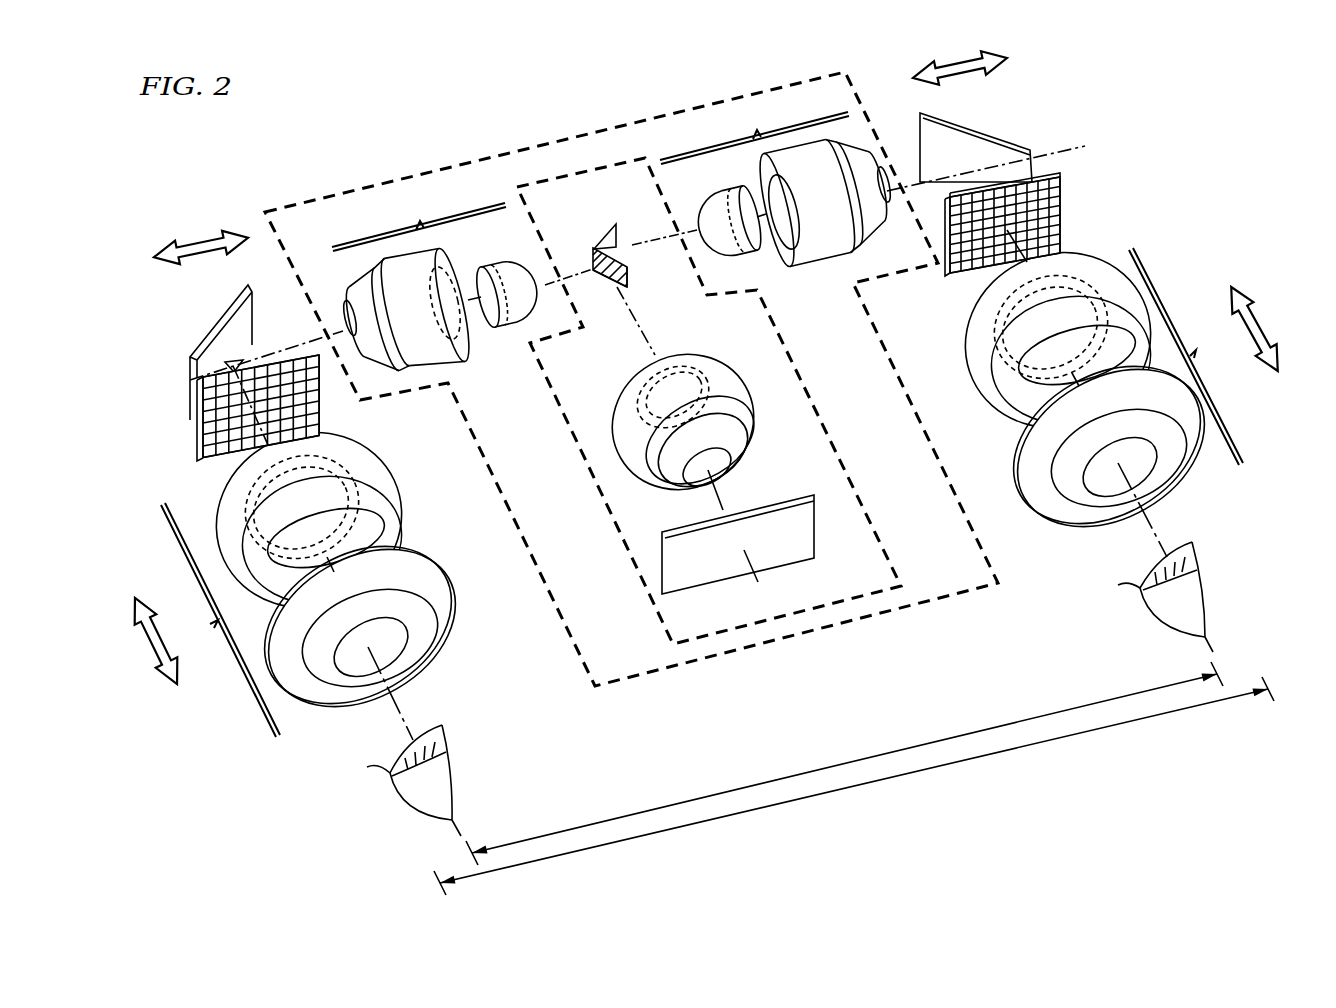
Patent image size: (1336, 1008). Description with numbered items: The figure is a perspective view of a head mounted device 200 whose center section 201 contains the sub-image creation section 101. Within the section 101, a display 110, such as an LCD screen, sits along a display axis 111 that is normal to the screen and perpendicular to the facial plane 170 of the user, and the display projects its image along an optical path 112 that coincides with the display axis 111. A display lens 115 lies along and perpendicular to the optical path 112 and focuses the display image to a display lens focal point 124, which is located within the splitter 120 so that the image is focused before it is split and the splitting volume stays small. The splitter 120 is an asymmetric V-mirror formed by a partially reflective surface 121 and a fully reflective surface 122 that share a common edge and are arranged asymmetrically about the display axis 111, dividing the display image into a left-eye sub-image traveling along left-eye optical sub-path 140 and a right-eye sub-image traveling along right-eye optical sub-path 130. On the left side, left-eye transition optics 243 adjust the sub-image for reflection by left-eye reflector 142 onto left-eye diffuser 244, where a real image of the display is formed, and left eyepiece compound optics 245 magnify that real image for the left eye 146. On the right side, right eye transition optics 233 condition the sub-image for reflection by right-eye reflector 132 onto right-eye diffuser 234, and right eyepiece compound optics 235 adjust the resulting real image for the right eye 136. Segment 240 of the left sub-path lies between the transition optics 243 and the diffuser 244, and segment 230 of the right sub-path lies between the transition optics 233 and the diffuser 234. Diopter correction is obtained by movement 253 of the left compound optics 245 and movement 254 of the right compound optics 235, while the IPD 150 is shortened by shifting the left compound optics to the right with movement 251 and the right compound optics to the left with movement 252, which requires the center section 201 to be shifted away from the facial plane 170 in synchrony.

The head mounted device 200 is at (232, 152).
The center section 201 is at (517, 525).
The sub-image creation section 101 is at (597, 483).
The display 110 is at (794, 555).
The display axis 111 is at (758, 582).
The optical path 112 is at (724, 501).
The display lens 115 is at (727, 386).
The splitter 120 is at (645, 287).
The partially reflective surface 121 is at (603, 284).
The fully reflective surface 122 is at (602, 237).
The display lens focal point 124 is at (629, 254).
The right-eye optical sub-path 130 is at (635, 238).
The right-eye reflector 132 is at (1017, 147).
The right eye 136 is at (1172, 625).
The left-eye optical sub-path 140 is at (580, 273).
The left-eye reflector 142 is at (202, 345).
The left eye 146 is at (418, 808).
The IPD 150 is at (827, 766).
The facial plane 170 is at (812, 798).
The segment of right-eye optical sub-path 230 is at (907, 187).
The right eye transition optics 233 is at (757, 130).
The right-eye diffuser 234 is at (1068, 196).
The right eyepiece compound optics 235 is at (1197, 351).
The segment of left-eye optical sub-path 240 is at (285, 339).
The left-eye transition optics 243 is at (420, 222).
The left-eye diffuser 244 is at (198, 440).
The left eyepiece compound optics 245 is at (217, 621).
The movement 251 is at (197, 241).
The movement 252 is at (960, 73).
The movement 253 is at (152, 647).
The movement 254 is at (1257, 327).